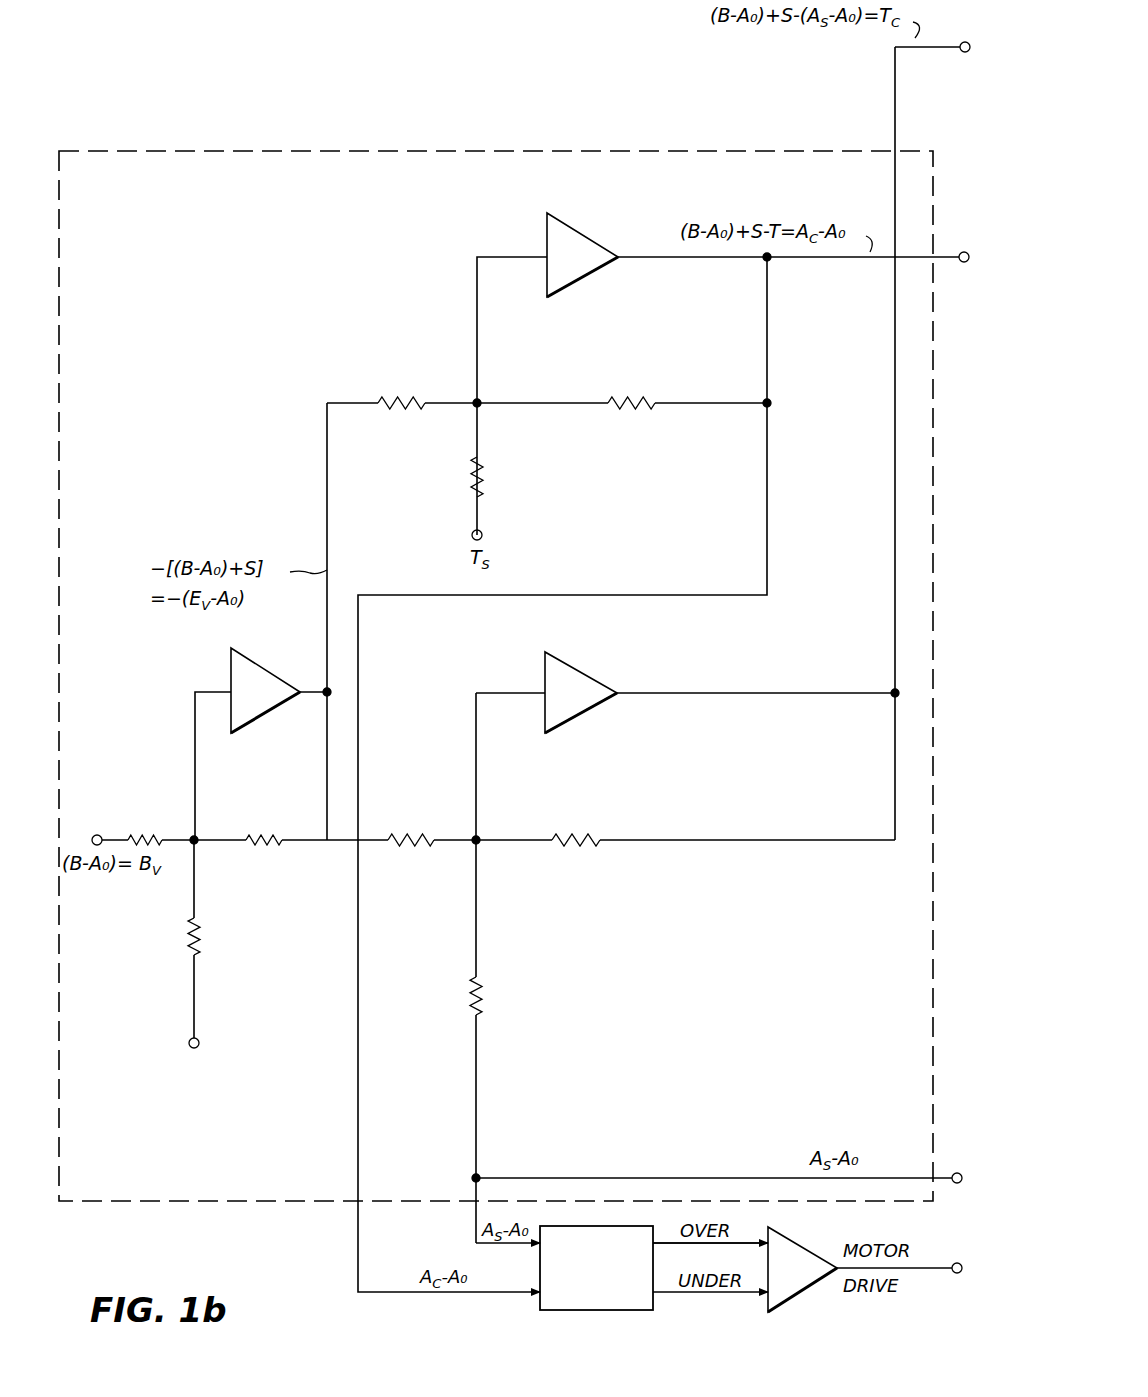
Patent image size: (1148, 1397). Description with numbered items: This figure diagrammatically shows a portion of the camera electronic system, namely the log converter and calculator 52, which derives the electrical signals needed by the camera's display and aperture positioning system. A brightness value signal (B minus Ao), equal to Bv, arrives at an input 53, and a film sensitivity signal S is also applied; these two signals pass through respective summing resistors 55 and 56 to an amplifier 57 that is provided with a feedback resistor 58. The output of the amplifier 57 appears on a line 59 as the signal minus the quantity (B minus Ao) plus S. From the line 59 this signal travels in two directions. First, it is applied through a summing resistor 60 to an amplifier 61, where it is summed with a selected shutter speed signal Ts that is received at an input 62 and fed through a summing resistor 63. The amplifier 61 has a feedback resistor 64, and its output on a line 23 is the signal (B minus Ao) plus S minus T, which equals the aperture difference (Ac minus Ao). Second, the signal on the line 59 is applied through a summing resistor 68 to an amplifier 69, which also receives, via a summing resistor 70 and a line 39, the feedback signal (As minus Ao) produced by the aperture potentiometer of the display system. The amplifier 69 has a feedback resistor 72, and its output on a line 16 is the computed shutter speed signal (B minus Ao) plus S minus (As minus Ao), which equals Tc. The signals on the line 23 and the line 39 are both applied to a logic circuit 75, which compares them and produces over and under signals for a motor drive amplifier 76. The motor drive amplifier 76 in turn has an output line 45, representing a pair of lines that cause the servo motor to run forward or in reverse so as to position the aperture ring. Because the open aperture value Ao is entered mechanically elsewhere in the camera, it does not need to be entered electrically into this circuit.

The line 16 is at (895, 92).
The amplifier 61 is at (547, 218).
The line 23 is at (767, 300).
The summing resistor 60 is at (405, 397).
The feedback resistor 64 is at (650, 398).
The summing resistor 63 is at (480, 462).
The input 62 is at (483, 532).
The line 59 is at (327, 555).
The amplifier 57 is at (231, 655).
The amplifier 69 is at (585, 670).
The input 53 is at (98, 833).
The summing resistor 55 is at (143, 835).
The feedback resistor 58 is at (267, 835).
The summing resistor 68 is at (408, 834).
The feedback resistor 72 is at (572, 846).
The summing resistor 56 is at (200, 930).
The summing resistor 70 is at (482, 992).
The line 39 is at (615, 1178).
The log converter and calculator 52 is at (197, 1203).
The logic circuit 75 is at (540, 1305).
The motor drive amplifier 76 is at (812, 1285).
The output line 45 is at (935, 1265).